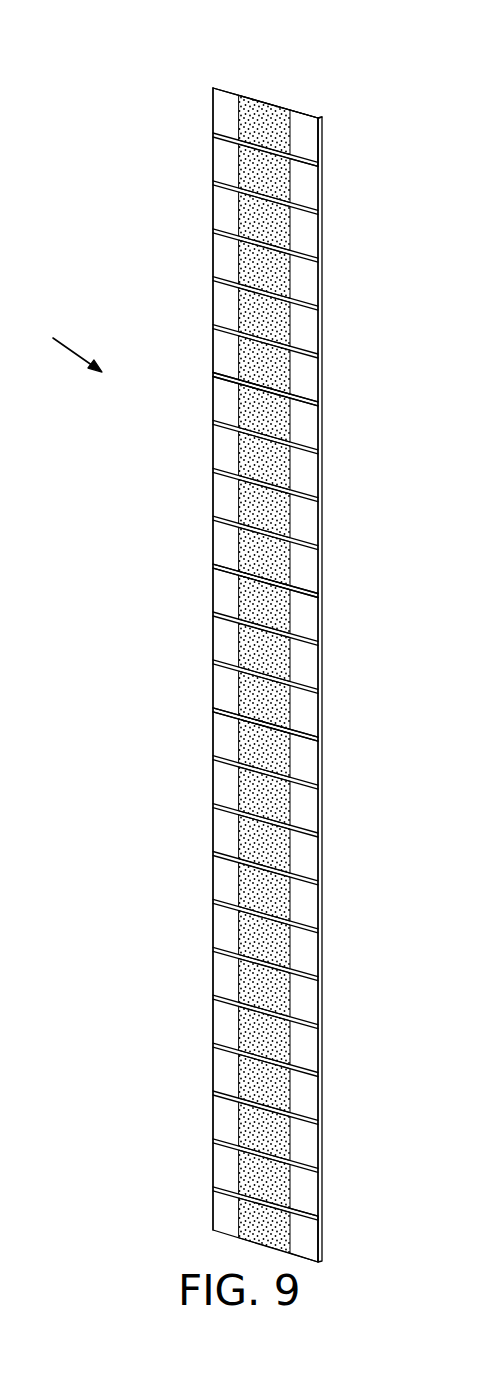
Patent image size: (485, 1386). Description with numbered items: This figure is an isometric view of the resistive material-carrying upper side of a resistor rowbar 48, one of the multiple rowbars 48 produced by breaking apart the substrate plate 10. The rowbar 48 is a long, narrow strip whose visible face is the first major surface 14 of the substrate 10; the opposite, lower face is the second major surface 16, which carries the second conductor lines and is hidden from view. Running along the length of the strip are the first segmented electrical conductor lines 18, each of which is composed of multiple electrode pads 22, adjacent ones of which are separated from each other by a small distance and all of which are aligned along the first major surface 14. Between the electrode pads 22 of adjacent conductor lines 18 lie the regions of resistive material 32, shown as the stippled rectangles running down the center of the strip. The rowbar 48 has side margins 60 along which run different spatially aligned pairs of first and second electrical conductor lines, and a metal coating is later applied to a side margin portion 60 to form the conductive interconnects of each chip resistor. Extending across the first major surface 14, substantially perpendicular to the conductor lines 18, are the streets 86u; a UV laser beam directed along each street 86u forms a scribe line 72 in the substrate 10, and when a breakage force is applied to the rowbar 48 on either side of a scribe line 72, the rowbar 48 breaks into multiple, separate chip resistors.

The substrate 10 is at (217, 86).
The first major surface 14 is at (218, 108).
The second major surface 16 is at (242, 91).
The first segmented electrical conductor lines 18 is at (303, 128).
The electrode pads 22 is at (222, 295).
The regions of resistive material 32 is at (263, 123).
The rowbar 48 is at (62, 341).
The side margin portion 60 is at (320, 147).
The scribe line 72 is at (213, 565).
The street 86u is at (212, 372).